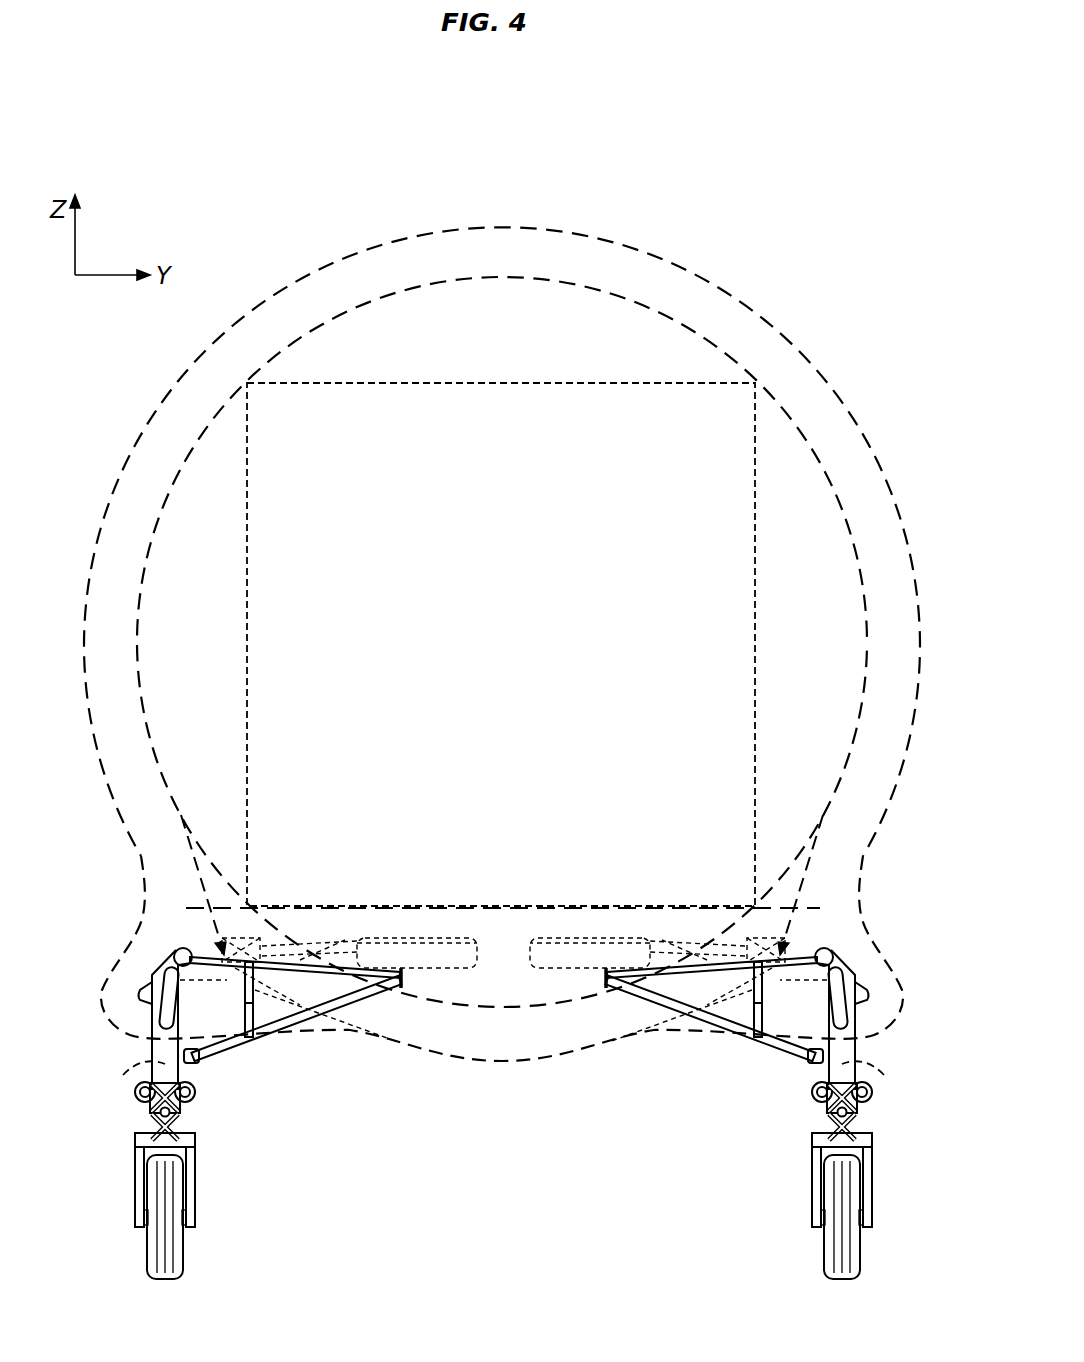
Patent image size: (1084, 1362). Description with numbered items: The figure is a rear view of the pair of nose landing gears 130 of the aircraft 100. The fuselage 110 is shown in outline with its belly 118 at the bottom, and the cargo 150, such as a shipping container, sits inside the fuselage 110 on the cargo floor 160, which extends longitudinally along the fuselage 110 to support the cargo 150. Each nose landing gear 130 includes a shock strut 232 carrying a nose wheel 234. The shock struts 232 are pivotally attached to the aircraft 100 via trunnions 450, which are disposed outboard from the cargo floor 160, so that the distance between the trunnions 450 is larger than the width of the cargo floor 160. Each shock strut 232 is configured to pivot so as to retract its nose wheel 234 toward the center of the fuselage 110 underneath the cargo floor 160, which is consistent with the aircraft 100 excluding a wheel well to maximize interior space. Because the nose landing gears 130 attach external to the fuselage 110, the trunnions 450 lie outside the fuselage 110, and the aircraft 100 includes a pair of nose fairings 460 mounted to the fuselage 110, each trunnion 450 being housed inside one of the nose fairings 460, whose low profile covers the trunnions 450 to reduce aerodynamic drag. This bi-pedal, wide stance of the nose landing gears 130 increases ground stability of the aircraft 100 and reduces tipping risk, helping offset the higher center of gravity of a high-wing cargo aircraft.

The aircraft 100 is at (372, 183).
The fuselage 110 is at (693, 272).
The belly 118 is at (503, 1064).
The nose landing gear 130 is at (256, 1216).
The cargo 150 is at (545, 382).
The cargo floor 160 is at (378, 905).
The shock strut 232 is at (199, 984).
The nose wheel 234 is at (440, 975).
The trunnion 450 is at (138, 990).
The nose fairing 460 is at (106, 955).